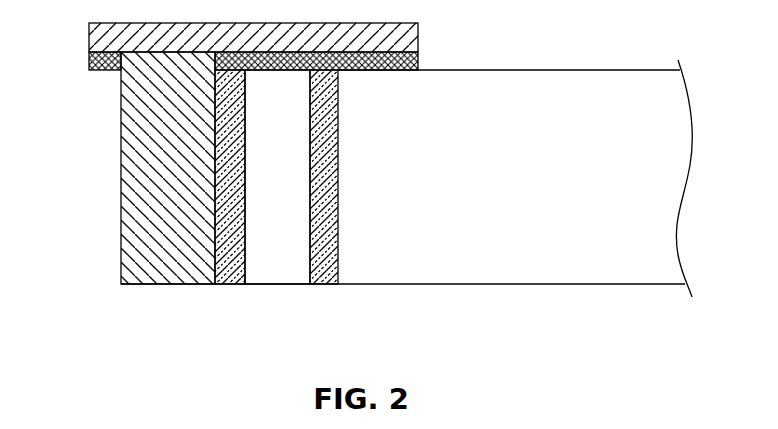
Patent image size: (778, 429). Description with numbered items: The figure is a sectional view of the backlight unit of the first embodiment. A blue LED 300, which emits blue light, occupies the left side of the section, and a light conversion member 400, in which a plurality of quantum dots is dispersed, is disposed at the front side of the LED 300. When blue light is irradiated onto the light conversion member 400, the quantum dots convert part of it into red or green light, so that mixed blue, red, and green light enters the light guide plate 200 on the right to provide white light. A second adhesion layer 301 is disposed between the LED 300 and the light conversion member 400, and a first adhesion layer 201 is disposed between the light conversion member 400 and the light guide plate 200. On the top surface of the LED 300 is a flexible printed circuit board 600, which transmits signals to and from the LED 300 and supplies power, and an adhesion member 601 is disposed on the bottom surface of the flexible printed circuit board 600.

The light guide plate 200 is at (490, 278).
The first adhesion layer 201 is at (322, 284).
The blue LED 300 is at (125, 183).
The second adhesion layer 301 is at (231, 284).
The light conversion member 400 is at (276, 284).
The flexible printed circuit board 600 is at (90, 38).
The adhesion member 601 is at (90, 58).